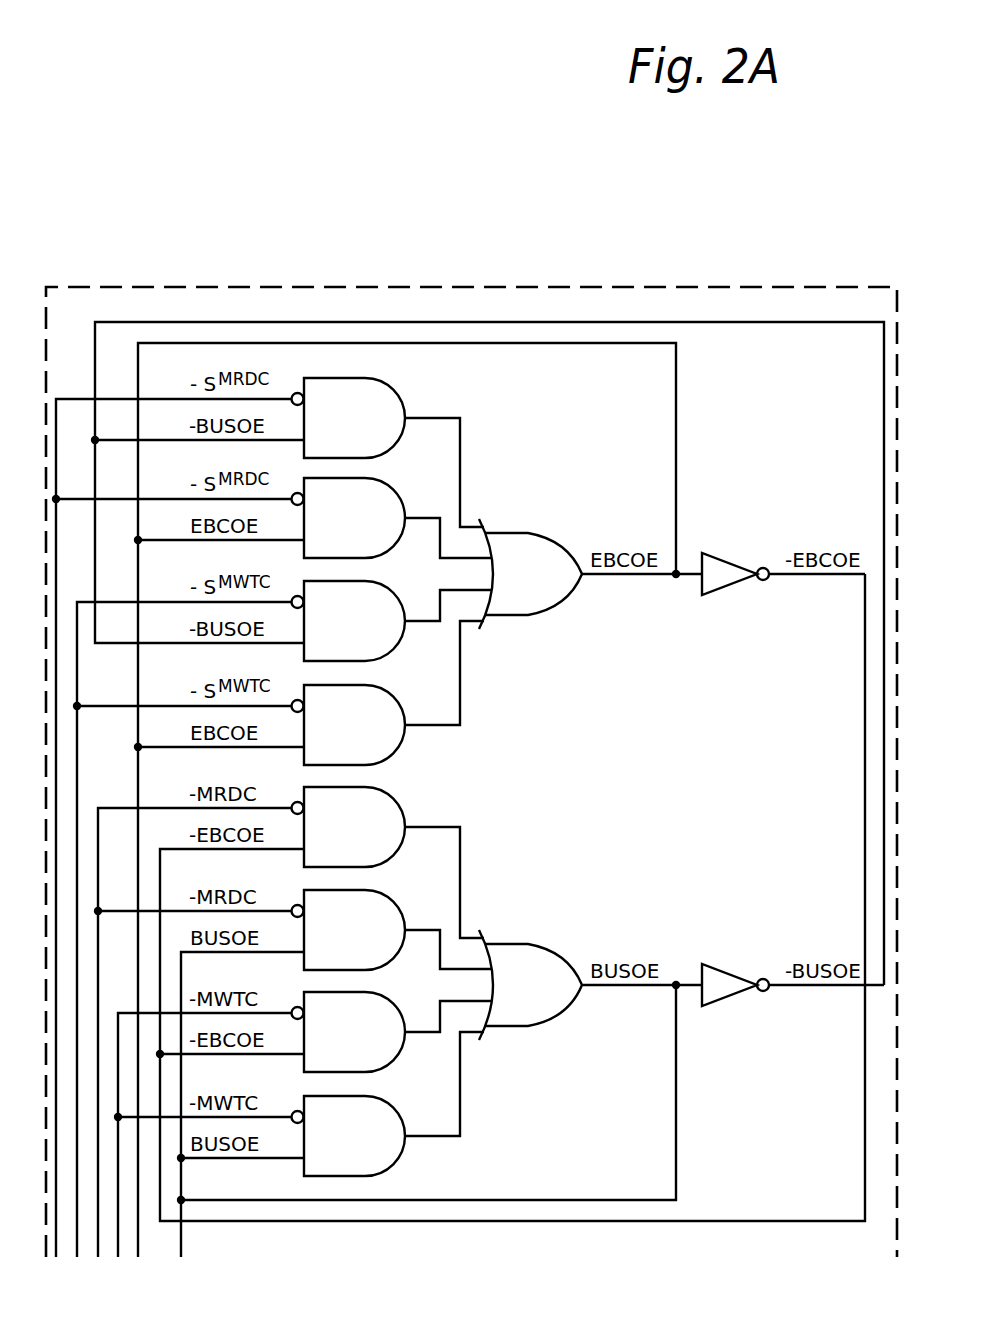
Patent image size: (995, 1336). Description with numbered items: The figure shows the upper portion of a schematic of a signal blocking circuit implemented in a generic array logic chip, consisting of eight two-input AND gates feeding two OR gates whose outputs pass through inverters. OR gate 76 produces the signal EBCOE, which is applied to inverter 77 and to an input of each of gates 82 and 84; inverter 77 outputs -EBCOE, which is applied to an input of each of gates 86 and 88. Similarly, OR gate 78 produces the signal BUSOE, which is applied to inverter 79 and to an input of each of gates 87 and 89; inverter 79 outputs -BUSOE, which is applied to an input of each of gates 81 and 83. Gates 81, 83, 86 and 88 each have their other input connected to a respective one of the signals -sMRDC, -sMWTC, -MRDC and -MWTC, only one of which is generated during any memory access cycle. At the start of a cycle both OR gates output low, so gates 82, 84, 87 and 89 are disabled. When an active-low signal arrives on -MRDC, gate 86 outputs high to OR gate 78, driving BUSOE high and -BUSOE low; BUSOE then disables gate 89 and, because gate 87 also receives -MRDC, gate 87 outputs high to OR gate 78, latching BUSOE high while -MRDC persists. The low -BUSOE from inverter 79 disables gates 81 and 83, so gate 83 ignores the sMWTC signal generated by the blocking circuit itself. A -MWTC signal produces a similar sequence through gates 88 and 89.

The OR gate 76 is at (563, 546).
The inverter 77 is at (727, 562).
The OR gate 78 is at (563, 957).
The inverter 79 is at (727, 973).
The gate 81 is at (390, 379).
The gate 82 is at (390, 479).
The gate 83 is at (390, 582).
The gate 84 is at (390, 686).
The gate 86 is at (390, 788).
The gate 87 is at (390, 891).
The gate 88 is at (390, 993).
The gate 89 is at (390, 1097).